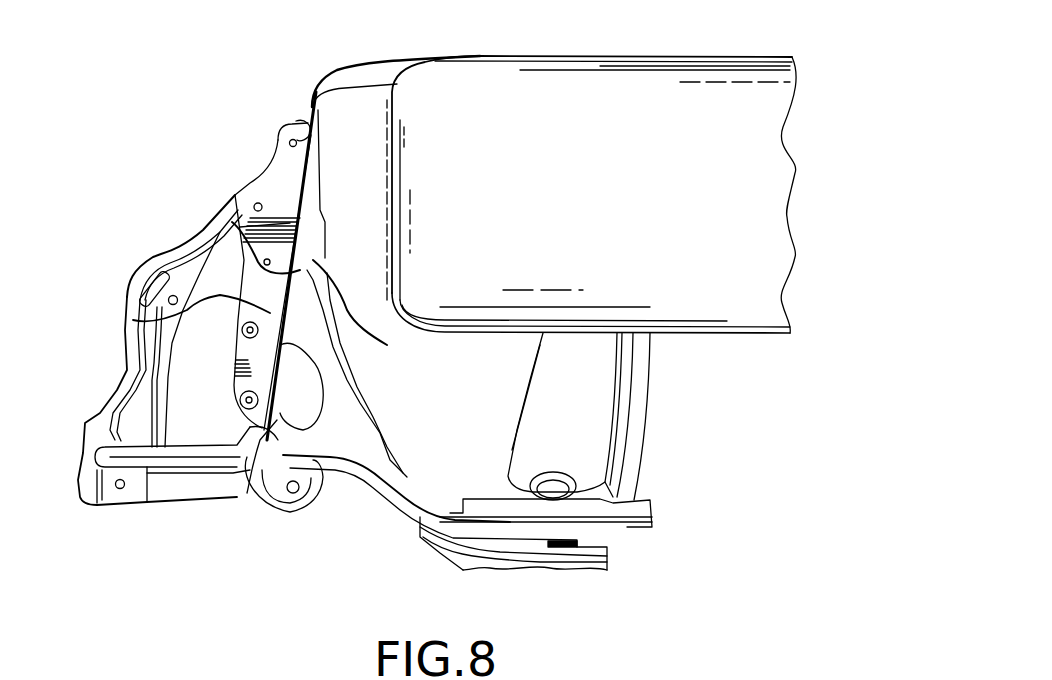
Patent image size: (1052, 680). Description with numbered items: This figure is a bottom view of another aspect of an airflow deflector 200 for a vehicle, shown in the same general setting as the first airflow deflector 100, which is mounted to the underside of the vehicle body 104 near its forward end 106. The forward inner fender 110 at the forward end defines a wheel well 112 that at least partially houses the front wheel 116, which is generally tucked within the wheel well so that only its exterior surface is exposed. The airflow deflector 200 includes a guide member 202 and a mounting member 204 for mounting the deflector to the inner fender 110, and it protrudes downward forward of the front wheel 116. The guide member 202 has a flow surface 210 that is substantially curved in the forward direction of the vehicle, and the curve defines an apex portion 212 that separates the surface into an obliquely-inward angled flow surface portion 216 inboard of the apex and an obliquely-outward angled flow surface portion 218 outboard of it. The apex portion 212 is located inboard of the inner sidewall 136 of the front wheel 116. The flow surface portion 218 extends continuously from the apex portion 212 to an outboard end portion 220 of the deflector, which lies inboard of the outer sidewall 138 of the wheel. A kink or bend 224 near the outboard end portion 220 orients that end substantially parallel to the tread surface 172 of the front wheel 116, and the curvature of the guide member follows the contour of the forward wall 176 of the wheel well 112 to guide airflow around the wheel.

The airflow deflector 100 is at (217, 160).
The body 104 is at (397, 522).
The forward end 106 is at (143, 365).
The forward inner fender 110 is at (500, 413).
The wheel well 112 is at (514, 375).
The front wheel 116 is at (657, 97).
The inner sidewall 136 is at (613, 333).
The outer sidewall 138 is at (593, 57).
The tread surface 172 is at (397, 180).
The forward wall 176 is at (357, 403).
The airflow deflector 200 is at (212, 192).
The guide member 202 is at (355, 330).
The mounting member 204 is at (267, 195).
The flow surface 210 is at (133, 320).
The apex portion 212 is at (240, 396).
The obliquely-inward angled flow surface portion 216 is at (247, 493).
The obliquely-outward angled flow surface portion 218 is at (232, 222).
The outboard end portion 220 is at (295, 124).
The bend 224 is at (317, 173).